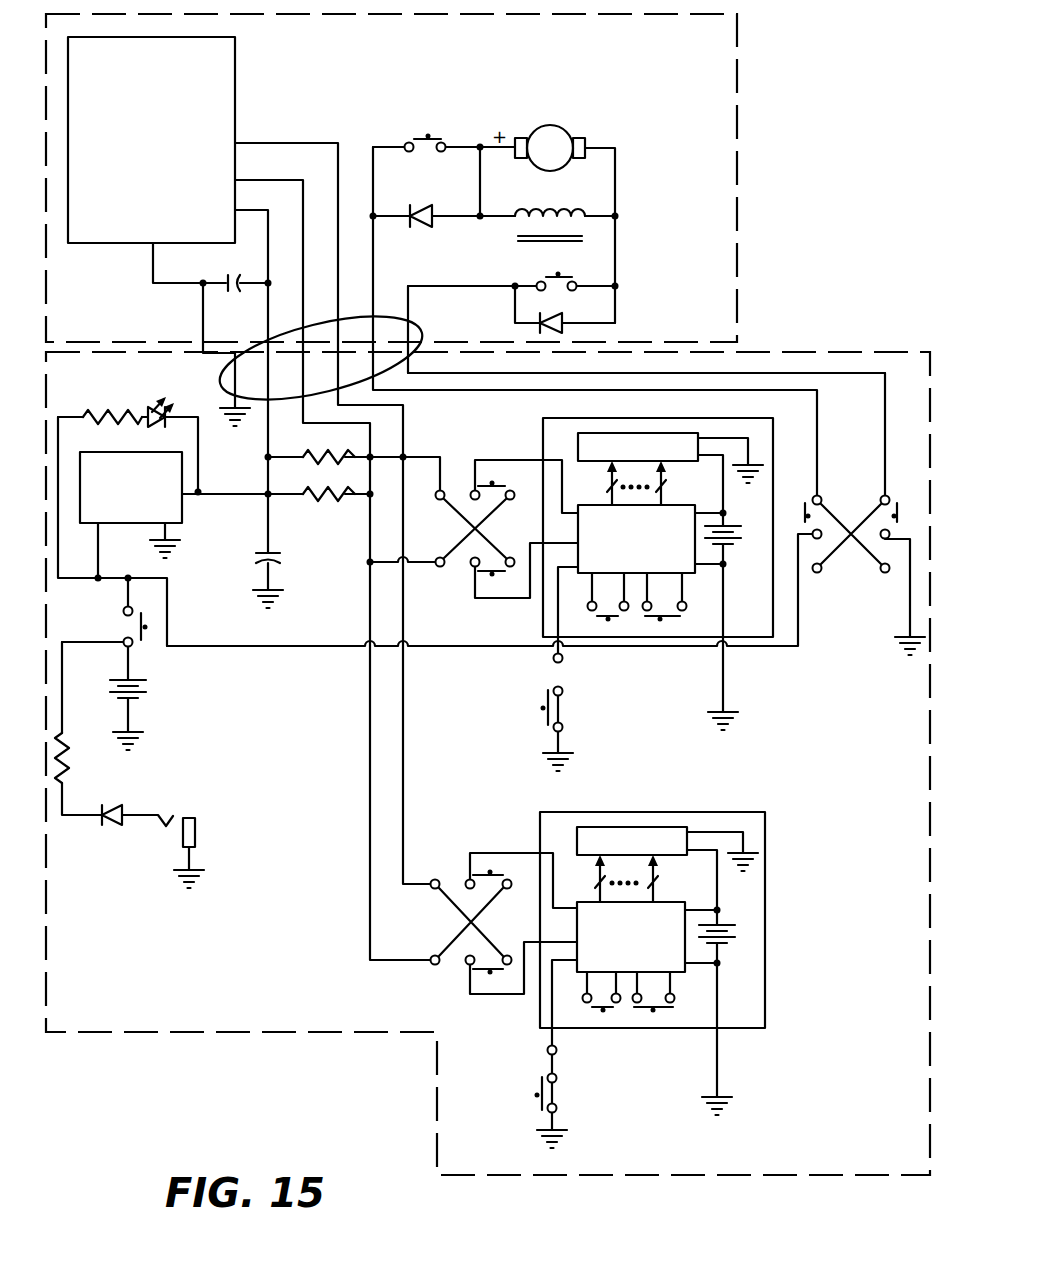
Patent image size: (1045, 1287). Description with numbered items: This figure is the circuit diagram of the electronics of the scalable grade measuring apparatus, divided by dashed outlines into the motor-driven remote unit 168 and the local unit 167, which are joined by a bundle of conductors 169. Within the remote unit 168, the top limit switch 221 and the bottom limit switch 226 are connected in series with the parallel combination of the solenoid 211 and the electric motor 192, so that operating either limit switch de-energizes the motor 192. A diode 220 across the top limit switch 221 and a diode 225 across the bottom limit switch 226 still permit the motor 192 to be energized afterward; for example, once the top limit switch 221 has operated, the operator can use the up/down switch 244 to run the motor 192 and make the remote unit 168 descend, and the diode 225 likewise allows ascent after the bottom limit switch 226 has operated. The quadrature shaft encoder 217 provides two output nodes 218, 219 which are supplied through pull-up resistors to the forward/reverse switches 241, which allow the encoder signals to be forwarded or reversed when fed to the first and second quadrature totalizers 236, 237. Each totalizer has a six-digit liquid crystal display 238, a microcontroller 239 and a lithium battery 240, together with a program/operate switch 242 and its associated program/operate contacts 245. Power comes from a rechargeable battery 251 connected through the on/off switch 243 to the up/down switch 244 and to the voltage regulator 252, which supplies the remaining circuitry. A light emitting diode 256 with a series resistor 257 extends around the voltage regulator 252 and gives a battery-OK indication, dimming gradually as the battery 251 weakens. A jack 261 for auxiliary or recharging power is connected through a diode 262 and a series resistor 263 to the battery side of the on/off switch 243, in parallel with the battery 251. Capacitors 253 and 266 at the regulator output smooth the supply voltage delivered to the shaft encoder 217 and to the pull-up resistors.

The local unit 167 is at (761, 347).
The motor-driven remote unit 168 is at (775, 150).
The conductor cable 169 is at (390, 338).
The electric motor 192 is at (568, 125).
The solenoid 211 is at (545, 210).
The quadrature shaft encoder 217 is at (166, 223).
The encoder output line 218 is at (300, 464).
The encoder output line 219 is at (300, 500).
The diode D1 220 is at (422, 224).
The upper limit switch 221 is at (404, 142).
The diode D2 225 is at (540, 330).
The lower limit switch 226 is at (548, 280).
The first quadrature totalizer 236 is at (831, 392).
The second quadrature totalizer 237 is at (772, 862).
The liquid crystal display 238 is at (578, 432).
The microcontroller 239 is at (688, 565).
The battery 240 is at (740, 547).
The forward/reverse switch 241 is at (468, 515).
The program/operate switch 242 is at (622, 625).
The on/off switch 243 is at (150, 630).
The up/down switch 244 is at (850, 520).
The program/operate switch 245 is at (554, 686).
The battery 251 is at (134, 683).
The voltage regulator 252 is at (180, 512).
The capacitor 253 is at (276, 575).
The light emitting diode 256 is at (150, 423).
The series resistor 257 is at (92, 390).
The jack 261 is at (172, 838).
The diode 262 is at (114, 806).
The series resistor 263 is at (84, 746).
The capacitor 266 is at (222, 293).